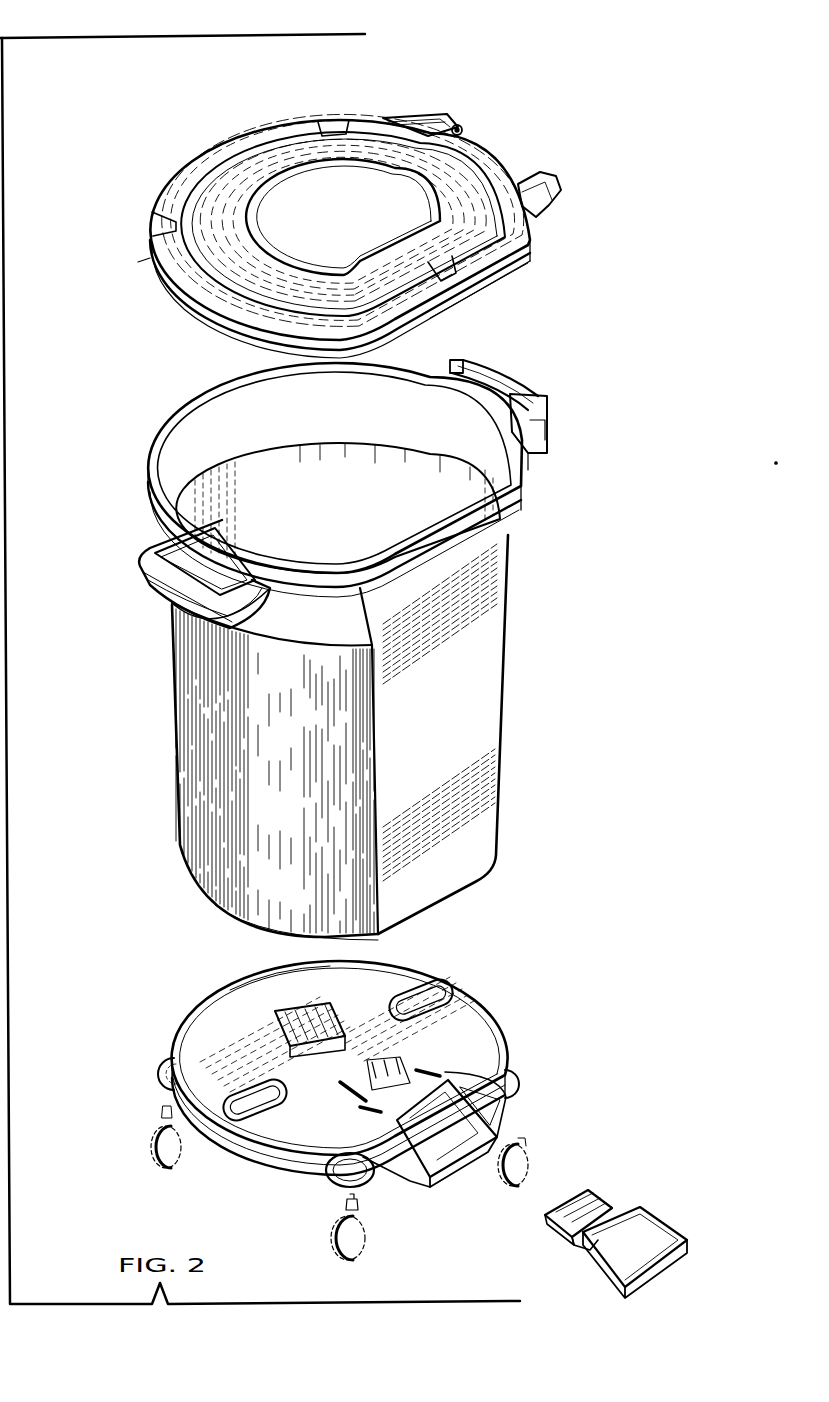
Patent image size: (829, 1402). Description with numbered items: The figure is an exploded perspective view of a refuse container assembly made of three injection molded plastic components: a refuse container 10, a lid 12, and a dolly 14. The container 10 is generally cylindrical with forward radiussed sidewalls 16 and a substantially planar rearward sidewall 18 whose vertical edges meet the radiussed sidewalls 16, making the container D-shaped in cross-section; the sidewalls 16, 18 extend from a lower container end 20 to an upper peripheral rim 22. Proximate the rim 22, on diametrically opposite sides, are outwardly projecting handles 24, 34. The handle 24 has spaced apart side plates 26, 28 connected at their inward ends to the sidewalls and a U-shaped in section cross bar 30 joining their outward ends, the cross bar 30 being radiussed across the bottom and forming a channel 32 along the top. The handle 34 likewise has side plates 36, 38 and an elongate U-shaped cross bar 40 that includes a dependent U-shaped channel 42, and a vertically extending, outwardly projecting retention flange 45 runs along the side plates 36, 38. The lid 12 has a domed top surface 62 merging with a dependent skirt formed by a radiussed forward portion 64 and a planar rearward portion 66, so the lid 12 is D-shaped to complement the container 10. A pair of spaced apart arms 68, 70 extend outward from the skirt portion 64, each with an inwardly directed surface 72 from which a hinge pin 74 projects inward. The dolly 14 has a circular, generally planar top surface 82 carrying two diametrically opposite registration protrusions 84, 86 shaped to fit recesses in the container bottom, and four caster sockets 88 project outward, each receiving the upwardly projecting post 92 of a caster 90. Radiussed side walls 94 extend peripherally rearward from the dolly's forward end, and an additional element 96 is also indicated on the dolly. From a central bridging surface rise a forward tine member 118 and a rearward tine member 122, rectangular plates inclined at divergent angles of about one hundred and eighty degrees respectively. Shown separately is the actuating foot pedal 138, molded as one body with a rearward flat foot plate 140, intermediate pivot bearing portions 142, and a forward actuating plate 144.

The refuse container 10 is at (345, 630).
The lid 12 is at (339, 202).
The dolly 14 is at (357, 1093).
The radiussed sidewalls 16 is at (186, 795).
The rearward sidewall 18 is at (484, 650).
The lower container end 20 is at (463, 905).
The upper peripheral rim 22 is at (526, 490).
The handle 24 is at (169, 583).
The side plate 26 is at (236, 632).
The side plate 28 is at (150, 526).
The cross bar 30 is at (162, 614).
The channel 32 is at (141, 553).
The handle 34 is at (536, 410).
The side plate 36 is at (536, 456).
The side plate 38 is at (452, 362).
The cross bar 40 is at (494, 372).
The U-shaped channel 42 is at (540, 392).
The retention flange 45 is at (547, 437).
The domed top surface 62 is at (343, 185).
The radiussed forward portion 64 is at (111, 236).
The planar rearward portion 66 is at (522, 262).
The arm 68 is at (548, 188).
The arm 70 is at (452, 97).
The inwardly directed surface 72 is at (447, 117).
The hinge pin 74 is at (466, 131).
The top surface 82 is at (480, 1030).
The registration protrusion 84 is at (446, 985).
The registration protrusion 86 is at (236, 1092).
The caster socket 88 is at (340, 1172).
The caster 90 is at (376, 1238).
The post 92 is at (366, 1206).
The radiussed side walls 94 is at (222, 990).
The side boss 96 is at (502, 1080).
The tine member 118 is at (292, 1020).
The tine member 122 is at (382, 1080).
The actuating foot pedal 138 is at (621, 1233).
The foot plate 140 is at (640, 1240).
The pivot bearing portion 142 is at (578, 1240).
The forward actuating plate 144 is at (590, 1195).